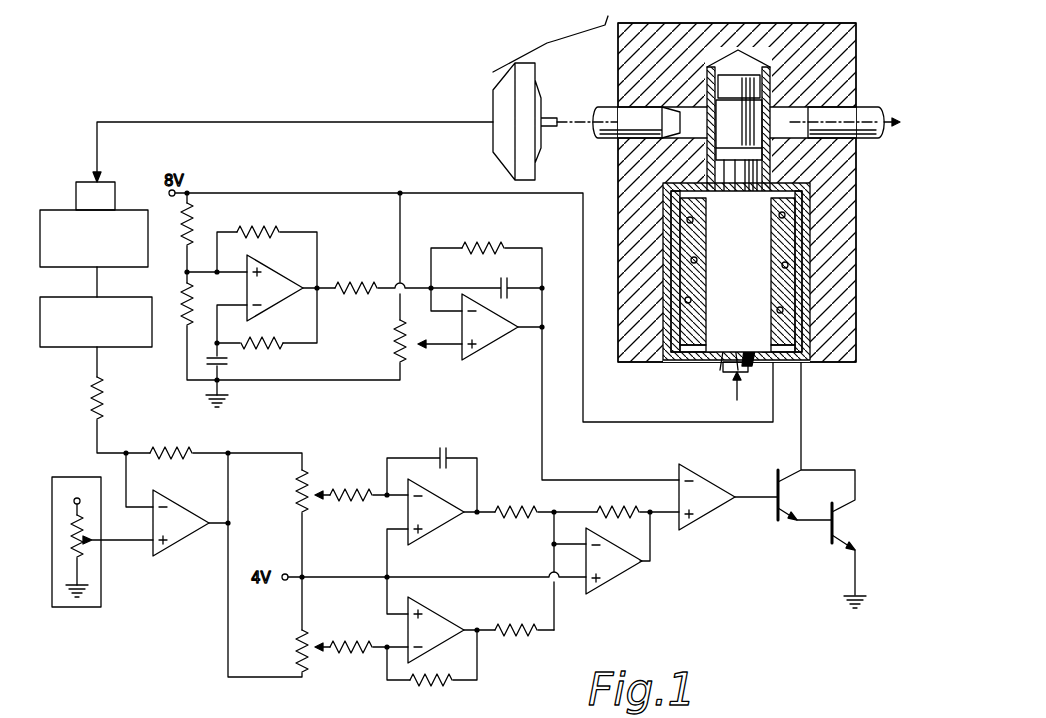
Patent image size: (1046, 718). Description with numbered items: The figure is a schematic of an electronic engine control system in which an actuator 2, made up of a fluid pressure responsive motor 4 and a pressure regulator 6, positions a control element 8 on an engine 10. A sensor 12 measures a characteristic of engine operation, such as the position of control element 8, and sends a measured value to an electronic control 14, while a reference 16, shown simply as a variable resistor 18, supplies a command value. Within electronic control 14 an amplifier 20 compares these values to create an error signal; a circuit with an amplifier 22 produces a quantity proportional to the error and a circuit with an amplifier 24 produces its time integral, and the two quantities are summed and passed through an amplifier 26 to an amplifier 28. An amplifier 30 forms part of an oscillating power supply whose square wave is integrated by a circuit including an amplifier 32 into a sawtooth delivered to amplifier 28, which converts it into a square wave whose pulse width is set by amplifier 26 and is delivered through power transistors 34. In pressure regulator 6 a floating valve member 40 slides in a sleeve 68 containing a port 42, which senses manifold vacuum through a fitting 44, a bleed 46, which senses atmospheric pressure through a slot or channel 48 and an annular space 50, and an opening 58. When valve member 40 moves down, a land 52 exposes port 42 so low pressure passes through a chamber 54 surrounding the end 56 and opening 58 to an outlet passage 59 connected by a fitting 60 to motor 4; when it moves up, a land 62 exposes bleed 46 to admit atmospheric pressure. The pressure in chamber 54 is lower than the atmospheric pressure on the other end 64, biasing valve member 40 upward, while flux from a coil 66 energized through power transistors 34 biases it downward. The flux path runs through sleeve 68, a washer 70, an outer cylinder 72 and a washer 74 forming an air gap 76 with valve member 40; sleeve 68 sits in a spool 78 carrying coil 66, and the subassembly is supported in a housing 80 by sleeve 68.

The actuator 2 is at (544, 44).
The fluid pressure responsive motor 4 is at (534, 92).
The pressure regulator 6 is at (618, 70).
The control element 8 is at (82, 182).
The engine 10 is at (135, 215).
The sensor 12 is at (117, 347).
The electronic control 14 is at (262, 186).
The reference 16 is at (83, 480).
The variable resistor 18 is at (90, 555).
The amplifier 20 is at (184, 538).
The amplifier 22 is at (435, 628).
The amplifier 24 is at (433, 520).
The amplifier 26 is at (612, 580).
The amplifier 28 is at (712, 503).
The amplifier 30 is at (275, 292).
The amplifier 32 is at (488, 336).
The power transistors 34 is at (840, 542).
The floating valve member 40 is at (775, 165).
The port 42 is at (791, 126).
The fitting 44 is at (862, 117).
The bleed 46 is at (705, 140).
The slot or channel 48 is at (720, 338).
The annular space 50 is at (708, 158).
The land 52 is at (742, 92).
The chamber 54 is at (758, 62).
The end 56 is at (738, 78).
The opening 58 is at (715, 105).
The outlet passage 59 is at (690, 110).
The fitting 60 is at (600, 134).
The land 62 is at (727, 148).
The end 64 is at (723, 372).
The coil 66 is at (795, 262).
The sleeve 68 is at (772, 246).
The washer 70 is at (800, 190).
The outer cylinder 72 is at (806, 288).
The washer 74 is at (812, 352).
The air gap 76 is at (758, 362).
The spool 78 is at (766, 313).
The housing 80 is at (848, 333).